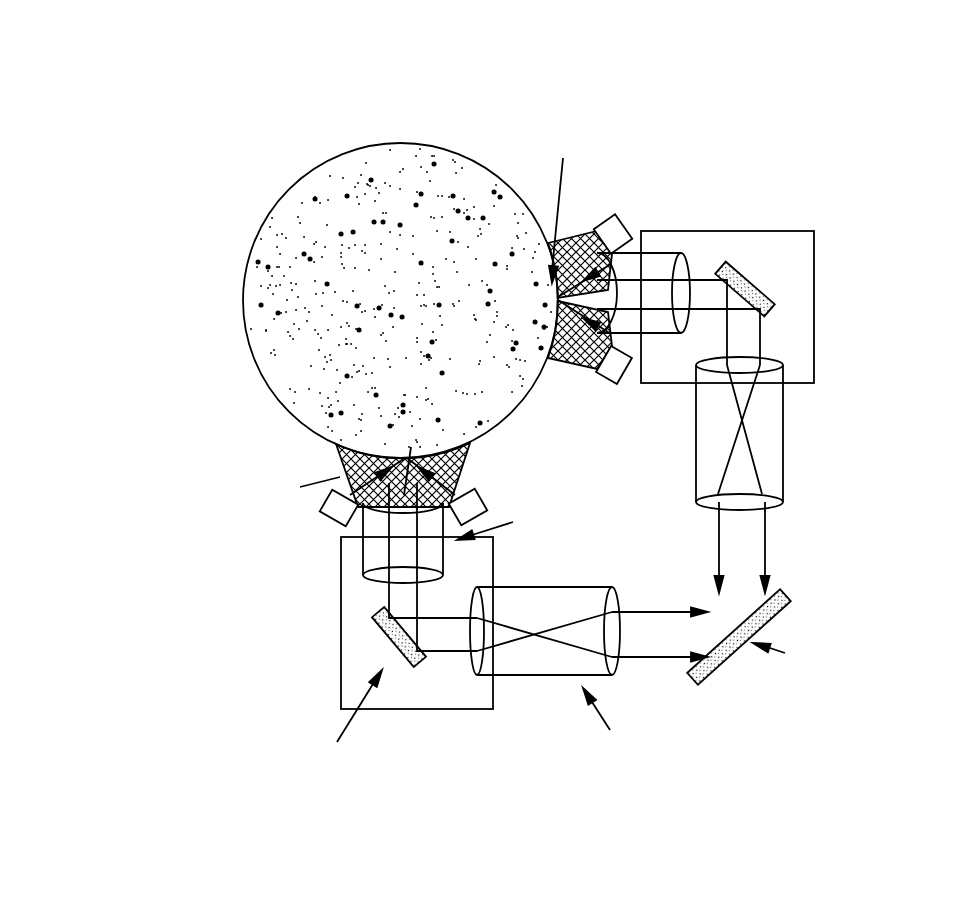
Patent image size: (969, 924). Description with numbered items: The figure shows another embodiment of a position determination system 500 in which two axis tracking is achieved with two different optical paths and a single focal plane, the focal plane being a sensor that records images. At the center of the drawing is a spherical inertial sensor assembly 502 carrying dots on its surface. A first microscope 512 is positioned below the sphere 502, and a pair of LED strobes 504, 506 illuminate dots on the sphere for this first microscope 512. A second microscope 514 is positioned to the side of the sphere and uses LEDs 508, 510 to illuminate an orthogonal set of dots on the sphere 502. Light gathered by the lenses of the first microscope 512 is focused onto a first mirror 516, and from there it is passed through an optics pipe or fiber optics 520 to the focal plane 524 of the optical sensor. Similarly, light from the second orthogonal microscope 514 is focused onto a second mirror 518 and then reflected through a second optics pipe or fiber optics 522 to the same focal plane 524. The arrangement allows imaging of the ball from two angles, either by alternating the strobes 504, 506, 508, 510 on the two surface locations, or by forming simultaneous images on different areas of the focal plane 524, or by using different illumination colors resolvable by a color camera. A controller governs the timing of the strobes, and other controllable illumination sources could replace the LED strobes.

The position determination system 500 is at (150, 150).
The spherical inertial sensor assembly 502 is at (337, 198).
The LED strobe 504 is at (328, 512).
The LED strobe 506 is at (477, 507).
The LED strobe 508 is at (618, 386).
The LED strobe 510 is at (627, 224).
The first microscope 512 is at (367, 547).
The second microscope 514 is at (660, 252).
The first mirror 516 is at (383, 647).
The second mirror 518 is at (763, 290).
The optics pipe or fiber optics 520 is at (555, 660).
The second optics pipe or fiber optics 522 is at (768, 450).
The focal plane 524 is at (770, 625).